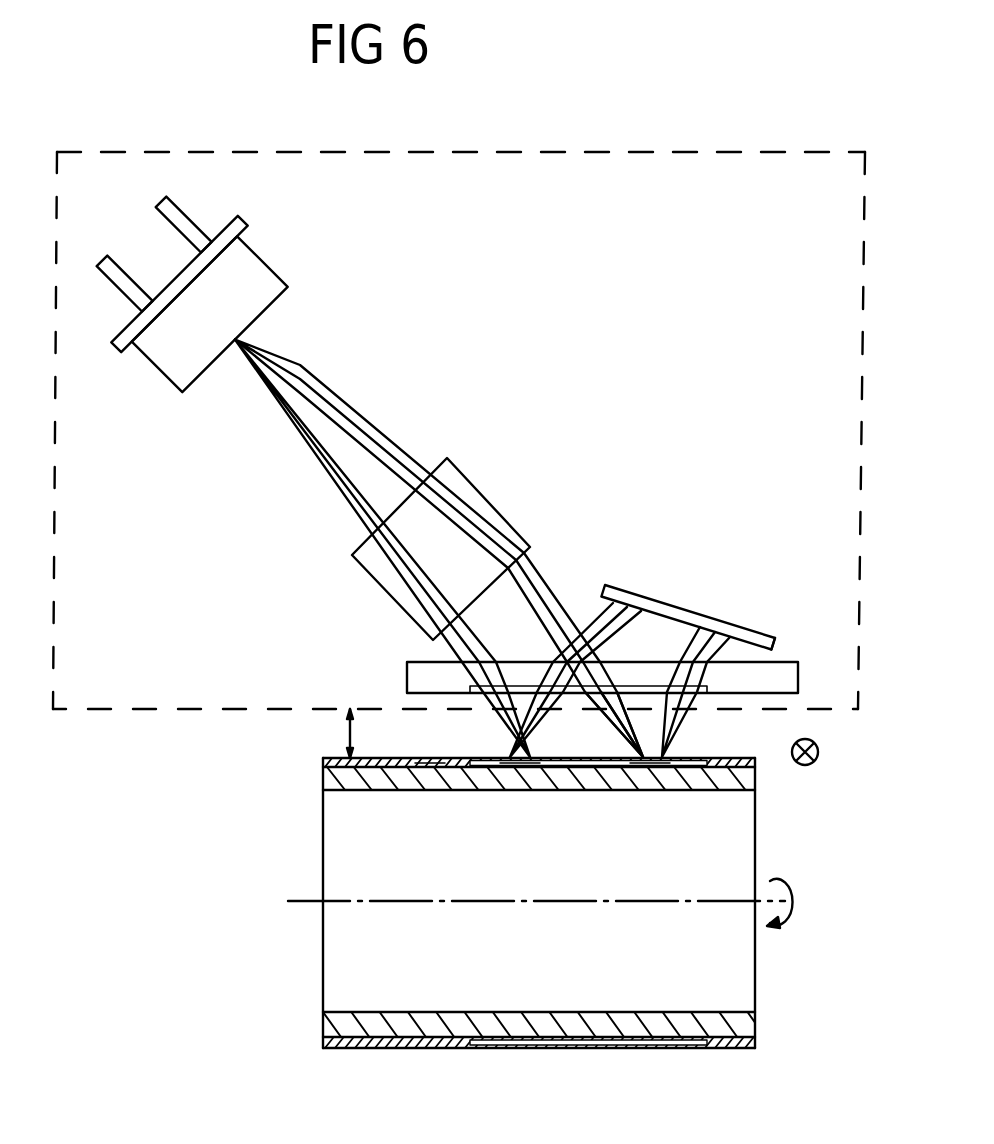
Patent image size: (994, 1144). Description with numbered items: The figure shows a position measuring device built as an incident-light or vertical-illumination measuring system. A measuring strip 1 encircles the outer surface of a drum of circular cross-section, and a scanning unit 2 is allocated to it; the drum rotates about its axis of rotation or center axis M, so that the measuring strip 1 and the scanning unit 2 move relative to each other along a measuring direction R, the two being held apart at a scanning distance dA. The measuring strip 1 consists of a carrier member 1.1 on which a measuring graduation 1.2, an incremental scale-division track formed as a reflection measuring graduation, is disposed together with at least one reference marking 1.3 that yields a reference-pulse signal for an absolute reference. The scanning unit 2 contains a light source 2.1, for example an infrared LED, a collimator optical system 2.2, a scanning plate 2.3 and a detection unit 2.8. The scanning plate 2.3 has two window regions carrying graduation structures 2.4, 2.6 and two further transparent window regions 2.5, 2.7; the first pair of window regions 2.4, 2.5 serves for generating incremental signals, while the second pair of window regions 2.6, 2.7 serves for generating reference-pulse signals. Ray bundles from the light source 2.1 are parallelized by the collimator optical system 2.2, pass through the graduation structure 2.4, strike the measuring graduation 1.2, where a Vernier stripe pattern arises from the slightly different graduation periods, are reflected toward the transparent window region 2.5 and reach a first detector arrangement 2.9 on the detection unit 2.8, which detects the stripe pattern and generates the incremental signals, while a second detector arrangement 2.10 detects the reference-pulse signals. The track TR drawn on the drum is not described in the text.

The measuring strip 1 is at (318, 766).
The carrier member 1.1 is at (428, 770).
The measuring graduation 1.2 is at (519, 770).
The reference marking 1.3 is at (620, 768).
The scanning unit 2 is at (124, 712).
The light source 2.1 is at (237, 303).
The collimator optical system 2.2 is at (468, 495).
The scanning plate 2.3 is at (427, 676).
The graduation structure 2.4 is at (497, 688).
The transparent window region 2.5 is at (543, 688).
The graduation structure 2.6 is at (628, 603).
The transparent window region 2.7 is at (757, 630).
The detection unit 2.8 is at (677, 663).
The first detector arrangement 2.9 is at (658, 615).
The second detector arrangement 2.10 is at (767, 634).
The scanning distance dA is at (337, 727).
The axis of rotation M is at (300, 901).
The measuring direction R is at (807, 766).
The track TR is at (323, 1022).